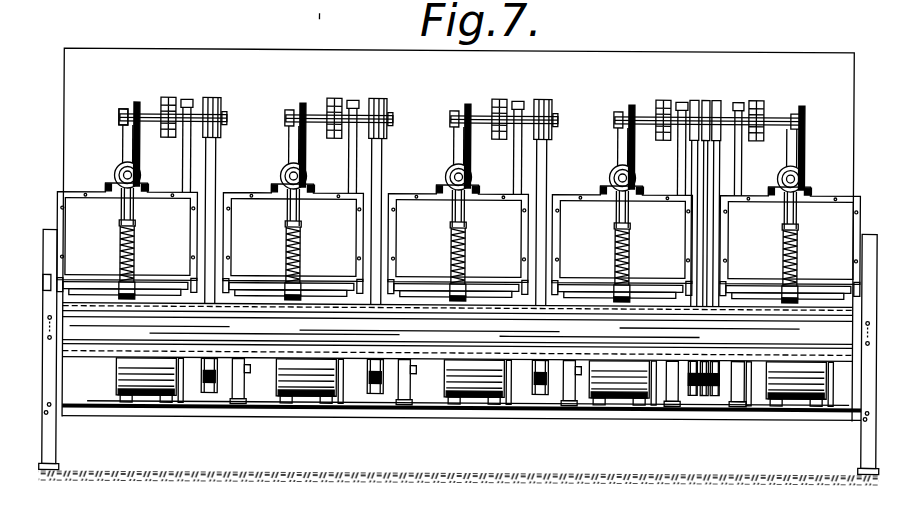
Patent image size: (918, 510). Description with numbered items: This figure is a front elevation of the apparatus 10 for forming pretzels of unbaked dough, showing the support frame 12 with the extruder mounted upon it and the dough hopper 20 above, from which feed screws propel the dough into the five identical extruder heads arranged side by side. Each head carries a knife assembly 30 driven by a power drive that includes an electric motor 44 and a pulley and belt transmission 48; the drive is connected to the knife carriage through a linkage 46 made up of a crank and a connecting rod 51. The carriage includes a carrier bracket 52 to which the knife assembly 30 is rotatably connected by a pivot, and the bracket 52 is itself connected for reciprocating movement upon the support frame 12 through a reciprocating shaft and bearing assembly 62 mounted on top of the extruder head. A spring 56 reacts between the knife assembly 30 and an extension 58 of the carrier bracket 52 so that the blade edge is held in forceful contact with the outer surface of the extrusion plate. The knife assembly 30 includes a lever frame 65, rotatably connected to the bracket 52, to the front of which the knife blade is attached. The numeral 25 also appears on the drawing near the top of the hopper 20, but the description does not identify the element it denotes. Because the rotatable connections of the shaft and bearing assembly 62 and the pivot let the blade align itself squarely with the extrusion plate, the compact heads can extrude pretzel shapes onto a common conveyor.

The apparatus 10 is at (699, 51).
The support frame 12 is at (53, 441).
The hopper 20 is at (180, 63).
The upper frame member 25 is at (322, 9).
The knife assembly 30 is at (152, 276).
The electric motor 44 is at (118, 383).
The linkage 46 is at (124, 109).
The pulley and belt transmission 48 is at (219, 187).
The connecting rod 51 is at (121, 120).
The bracket 52 is at (147, 206).
The spring 56 is at (145, 254).
The extension 58 is at (152, 230).
The reciprocating shaft and bearing assembly 62 is at (107, 175).
The lever frame 65 is at (120, 271).